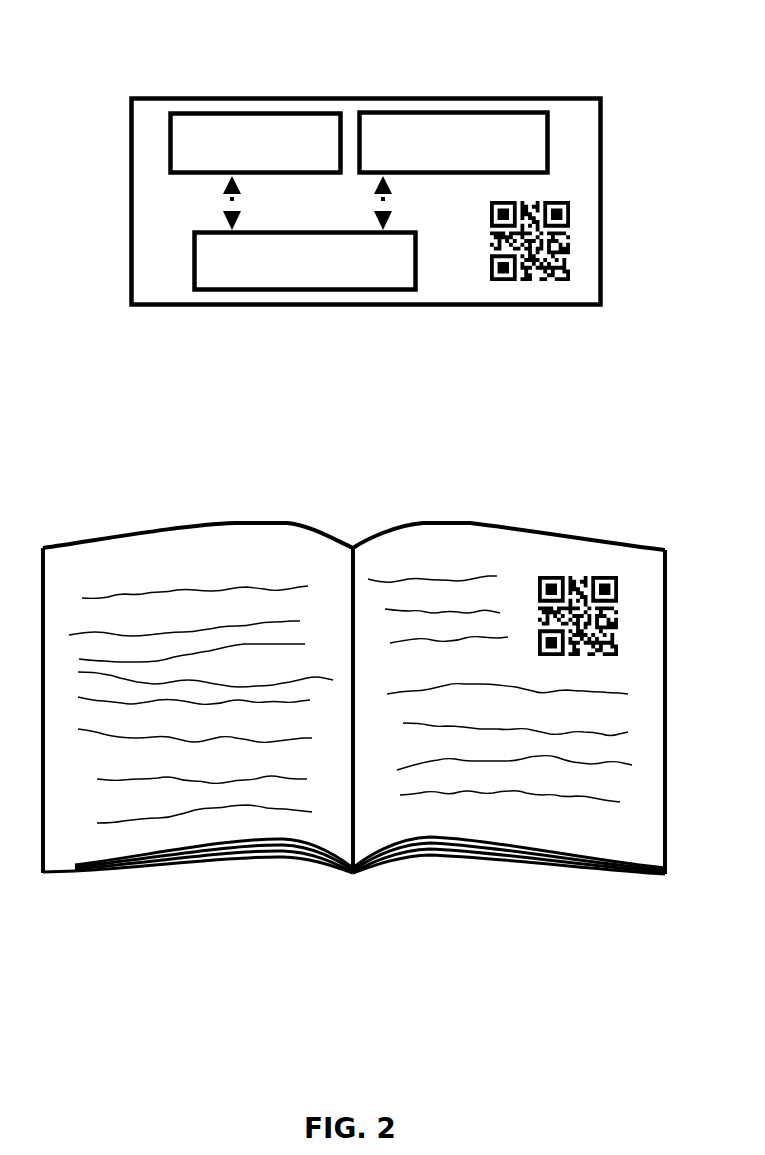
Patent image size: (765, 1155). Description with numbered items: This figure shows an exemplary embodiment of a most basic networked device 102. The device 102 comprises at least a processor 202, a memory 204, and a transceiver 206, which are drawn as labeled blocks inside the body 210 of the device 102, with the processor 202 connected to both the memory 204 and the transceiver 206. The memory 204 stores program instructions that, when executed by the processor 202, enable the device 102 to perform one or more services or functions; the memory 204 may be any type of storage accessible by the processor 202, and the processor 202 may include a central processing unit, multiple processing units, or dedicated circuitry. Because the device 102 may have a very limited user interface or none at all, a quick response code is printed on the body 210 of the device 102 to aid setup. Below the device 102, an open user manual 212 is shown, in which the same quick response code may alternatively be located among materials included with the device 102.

The device 102 is at (126, 50).
The processor 202 is at (238, 293).
The memory 204 is at (248, 112).
The transceiver 206 is at (417, 111).
The body 210 is at (528, 96).
The user manual 212 is at (78, 496).